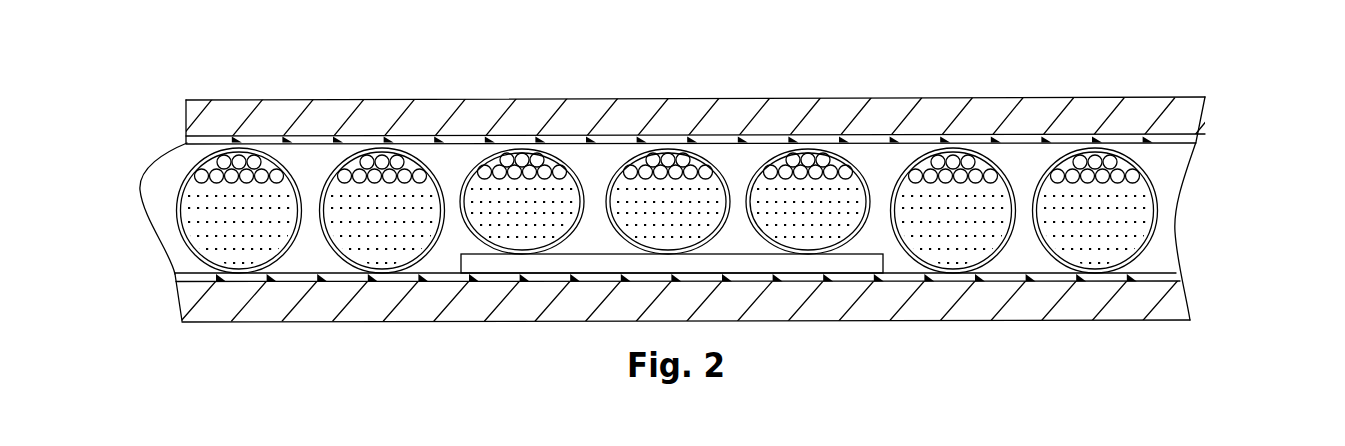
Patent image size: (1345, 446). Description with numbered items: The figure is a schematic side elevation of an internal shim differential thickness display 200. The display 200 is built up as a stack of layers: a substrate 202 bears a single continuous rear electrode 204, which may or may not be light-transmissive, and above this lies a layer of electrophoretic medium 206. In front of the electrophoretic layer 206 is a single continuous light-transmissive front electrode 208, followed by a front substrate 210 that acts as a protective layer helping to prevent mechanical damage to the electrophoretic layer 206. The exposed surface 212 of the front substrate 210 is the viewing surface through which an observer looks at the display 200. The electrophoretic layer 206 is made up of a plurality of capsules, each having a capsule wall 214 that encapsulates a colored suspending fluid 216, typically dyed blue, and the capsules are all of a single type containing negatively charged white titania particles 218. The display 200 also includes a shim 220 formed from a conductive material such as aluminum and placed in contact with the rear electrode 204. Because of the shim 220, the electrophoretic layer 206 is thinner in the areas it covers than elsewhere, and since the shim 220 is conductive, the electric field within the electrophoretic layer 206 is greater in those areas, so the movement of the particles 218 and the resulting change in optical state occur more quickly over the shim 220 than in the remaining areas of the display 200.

The internal shim differential thickness display 200 is at (1203, 203).
The substrate 202 is at (701, 328).
The rear electrode 204 is at (1052, 273).
The layer of electrophoretic medium 206 is at (168, 197).
The front electrode 208 is at (703, 75).
The front substrate 210 is at (973, 125).
The exposed surface 212 is at (883, 97).
The capsule wall 214 is at (286, 162).
The colored suspending fluid 216 is at (232, 207).
The white titania particles 218 is at (383, 160).
The shim 220 is at (502, 270).